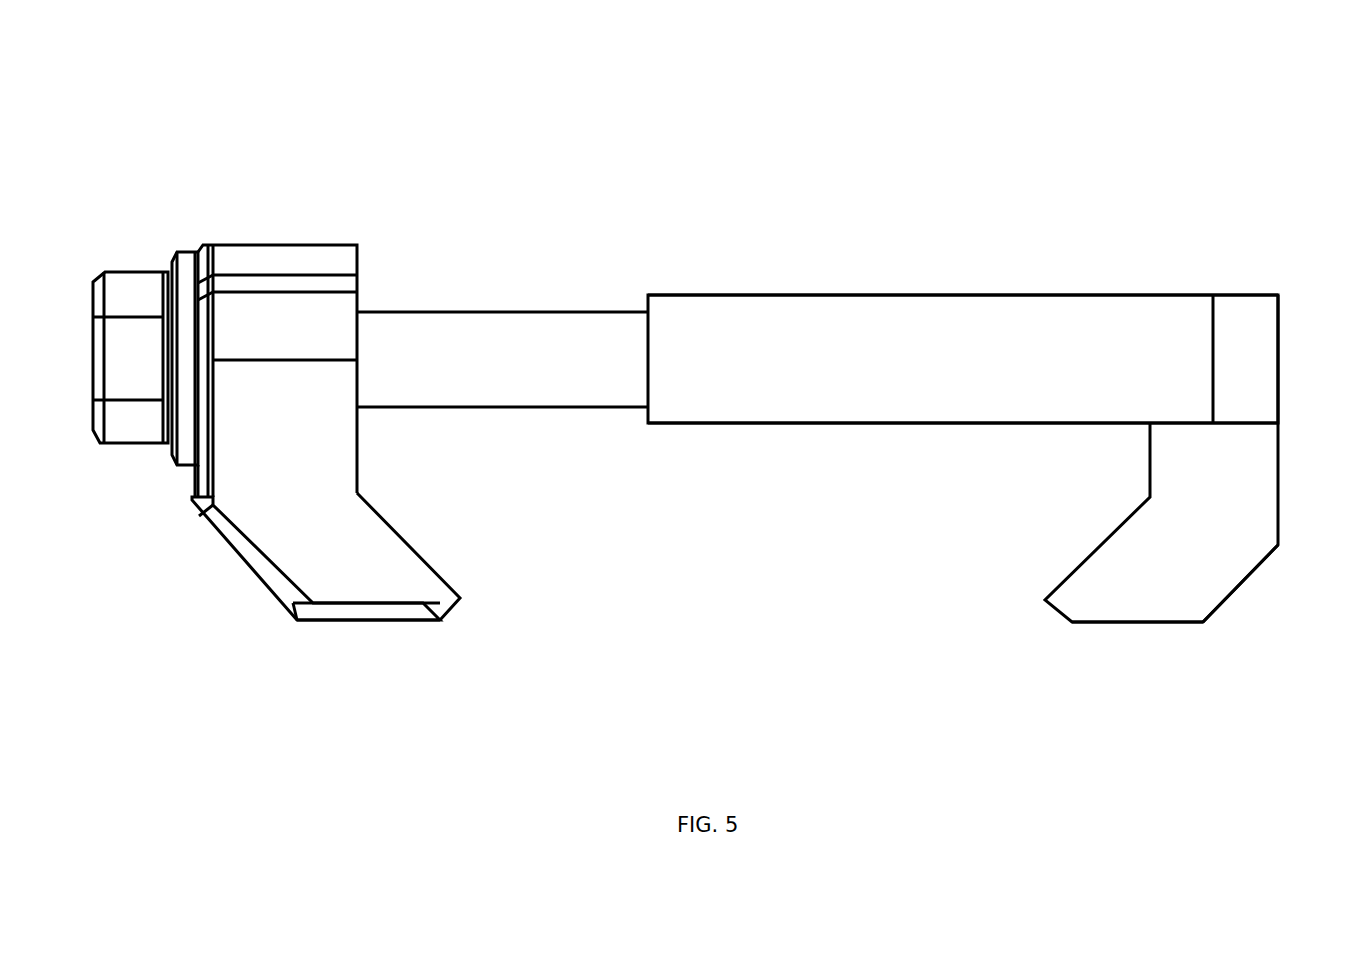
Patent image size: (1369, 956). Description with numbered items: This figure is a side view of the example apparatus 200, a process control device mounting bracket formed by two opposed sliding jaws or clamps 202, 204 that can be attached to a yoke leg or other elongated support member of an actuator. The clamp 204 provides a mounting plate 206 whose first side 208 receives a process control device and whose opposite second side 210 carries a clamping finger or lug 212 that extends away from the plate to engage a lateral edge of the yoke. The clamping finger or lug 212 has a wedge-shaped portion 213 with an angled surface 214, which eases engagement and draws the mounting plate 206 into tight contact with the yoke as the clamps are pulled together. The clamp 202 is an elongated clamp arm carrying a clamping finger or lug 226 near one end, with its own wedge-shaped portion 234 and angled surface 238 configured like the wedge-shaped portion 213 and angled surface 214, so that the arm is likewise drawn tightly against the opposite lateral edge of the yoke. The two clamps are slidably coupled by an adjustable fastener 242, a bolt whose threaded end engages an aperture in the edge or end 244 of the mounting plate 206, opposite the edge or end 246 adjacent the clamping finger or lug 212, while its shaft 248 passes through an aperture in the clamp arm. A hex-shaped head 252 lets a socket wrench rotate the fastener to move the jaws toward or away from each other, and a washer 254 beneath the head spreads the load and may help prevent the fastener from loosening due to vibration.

The apparatus 200 is at (970, 82).
The jaw or clamp 202 is at (310, 203).
The jaw or clamp 204 is at (910, 242).
The mounting plate 206 is at (798, 337).
The first side 208 is at (983, 295).
The second side 210 is at (872, 423).
The clamping finger or lug 212 is at (1130, 618).
The wedge-shaped portion 213 is at (1160, 582).
The angled surface 214 is at (1083, 558).
The clamping finger or lug 226 is at (262, 487).
The wedge-shaped portion 234 is at (387, 587).
The angled surface 238 is at (417, 553).
The adjustable fastener 242 is at (502, 337).
The edge or end 244 is at (645, 418).
The edge or end 246 is at (1279, 348).
The shaft 248 is at (473, 377).
The hex-shaped head 252 is at (130, 270).
The washer 254 is at (183, 252).